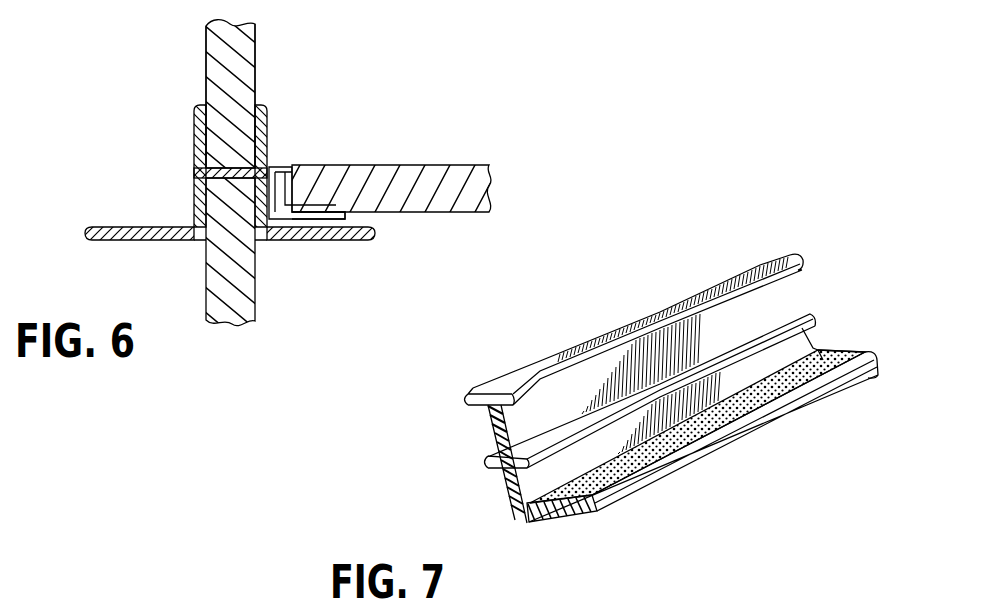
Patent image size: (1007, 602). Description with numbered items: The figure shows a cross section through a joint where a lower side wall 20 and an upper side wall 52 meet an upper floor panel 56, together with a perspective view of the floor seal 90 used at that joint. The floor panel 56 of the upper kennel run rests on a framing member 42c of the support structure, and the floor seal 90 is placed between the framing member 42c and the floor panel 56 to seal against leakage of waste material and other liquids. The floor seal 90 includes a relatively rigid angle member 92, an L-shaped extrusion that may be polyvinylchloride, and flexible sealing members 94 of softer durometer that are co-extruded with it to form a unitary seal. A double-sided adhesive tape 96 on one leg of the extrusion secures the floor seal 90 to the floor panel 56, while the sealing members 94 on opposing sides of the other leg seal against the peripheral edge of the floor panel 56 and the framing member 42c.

In FIG. 6, the side wall 20 is at (256, 303).
In FIG. 6, the framing member 42c is at (144, 226).
In FIG. 6, the upper side wall 52 is at (207, 46).
In FIG. 6, the floor panel 56 is at (420, 164).
In FIG. 6, the floor seal 90 is at (281, 162).
In FIG. 7, the floor seal 90 is at (446, 486).
In FIG. 7, the angle member 92 is at (500, 496).
In FIG. 7, the sealing member 94 is at (815, 313).
In FIG. 6, the double-sided adhesive tape 96 is at (338, 218).
In FIG. 7, the double-sided adhesive tape 96 is at (828, 345).